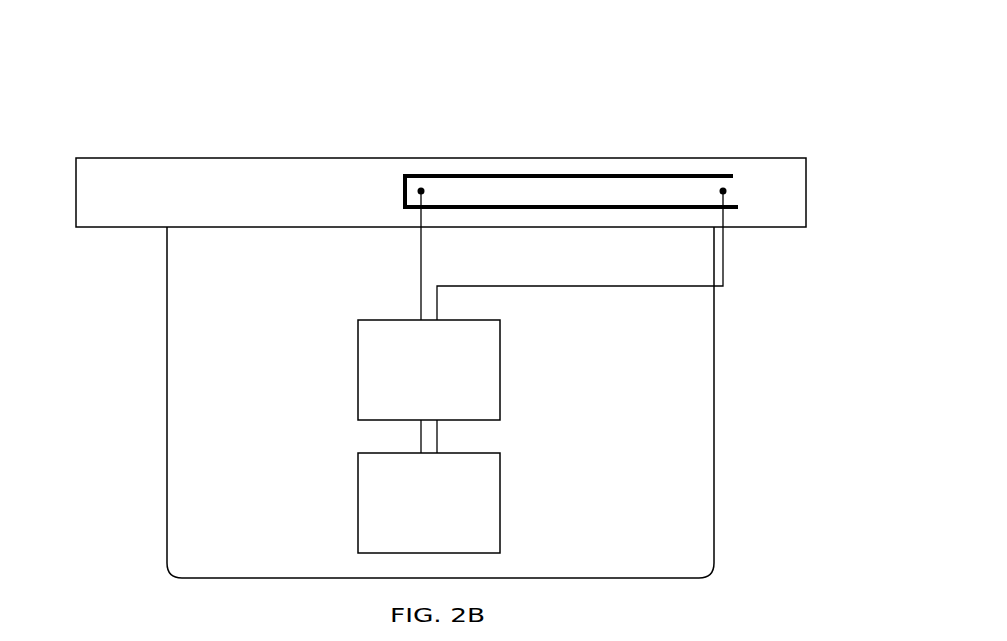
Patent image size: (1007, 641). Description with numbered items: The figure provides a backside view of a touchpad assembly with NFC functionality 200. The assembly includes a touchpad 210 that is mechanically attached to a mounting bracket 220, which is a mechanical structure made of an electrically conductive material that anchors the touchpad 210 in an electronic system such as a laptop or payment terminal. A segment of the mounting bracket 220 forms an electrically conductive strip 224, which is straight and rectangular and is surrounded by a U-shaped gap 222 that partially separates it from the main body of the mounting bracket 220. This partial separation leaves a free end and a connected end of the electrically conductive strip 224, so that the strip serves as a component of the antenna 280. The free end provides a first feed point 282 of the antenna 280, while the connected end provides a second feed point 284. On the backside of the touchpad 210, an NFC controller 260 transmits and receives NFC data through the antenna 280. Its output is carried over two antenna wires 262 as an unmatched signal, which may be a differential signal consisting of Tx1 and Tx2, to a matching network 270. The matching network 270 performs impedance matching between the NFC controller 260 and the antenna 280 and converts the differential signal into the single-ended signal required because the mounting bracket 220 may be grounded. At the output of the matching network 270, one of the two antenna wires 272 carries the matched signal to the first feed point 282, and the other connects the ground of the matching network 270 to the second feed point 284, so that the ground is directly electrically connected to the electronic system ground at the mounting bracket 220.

The touchpad assembly with NFC functionality 200 is at (540, 67).
The touchpad 210 is at (270, 418).
The mounting bracket 220 is at (218, 180).
The gap 222 is at (670, 172).
The electrically conductive strip 224 is at (523, 188).
The NFC controller 260 is at (447, 540).
The antenna wires 262 is at (443, 432).
The matching network 270 is at (447, 406).
The antenna wires 272 is at (443, 307).
The antenna 280 is at (740, 160).
The first feed point 282 is at (421, 191).
The second feed point 284 is at (723, 191).